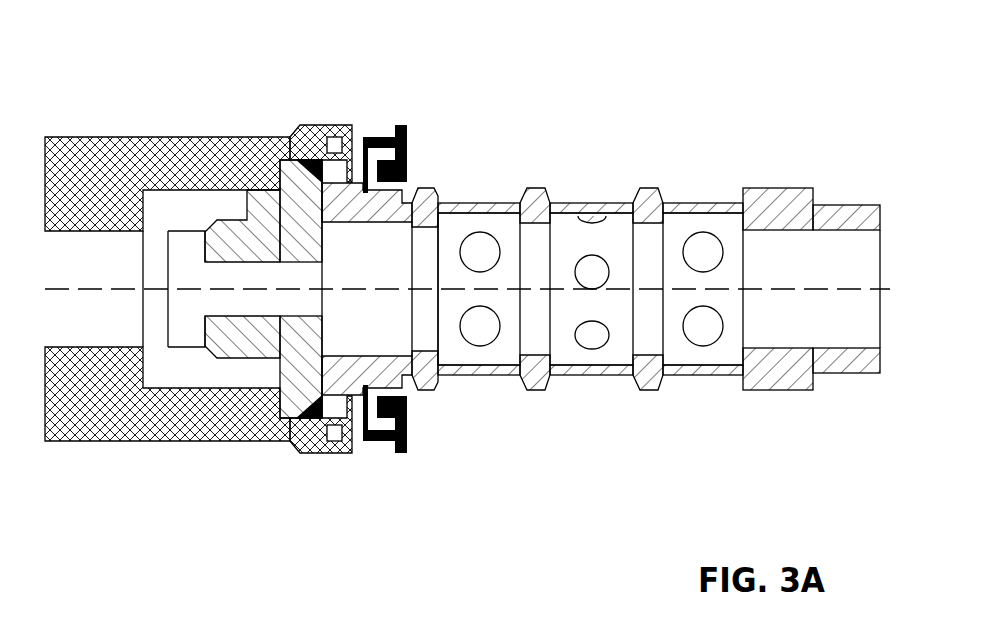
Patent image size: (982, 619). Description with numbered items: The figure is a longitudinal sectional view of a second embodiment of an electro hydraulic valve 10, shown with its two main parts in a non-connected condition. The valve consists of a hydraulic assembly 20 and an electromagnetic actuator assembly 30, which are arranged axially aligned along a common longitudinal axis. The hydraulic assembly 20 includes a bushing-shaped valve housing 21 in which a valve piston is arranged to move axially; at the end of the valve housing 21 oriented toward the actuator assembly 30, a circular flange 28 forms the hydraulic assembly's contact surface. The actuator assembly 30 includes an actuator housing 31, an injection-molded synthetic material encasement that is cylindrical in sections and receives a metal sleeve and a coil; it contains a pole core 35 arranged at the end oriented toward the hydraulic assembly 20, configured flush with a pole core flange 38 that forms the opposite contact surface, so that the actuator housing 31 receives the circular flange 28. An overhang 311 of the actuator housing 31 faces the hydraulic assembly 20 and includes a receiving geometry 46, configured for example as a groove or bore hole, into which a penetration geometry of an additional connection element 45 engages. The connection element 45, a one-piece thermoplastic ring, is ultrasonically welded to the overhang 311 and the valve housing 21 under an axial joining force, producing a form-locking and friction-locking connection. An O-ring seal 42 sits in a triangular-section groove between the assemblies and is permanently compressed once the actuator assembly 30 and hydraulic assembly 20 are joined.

The electro hydraulic valve 10 is at (467, 294).
The hydraulic assembly 20 is at (601, 353).
The valve housing 21 is at (648, 373).
The circular flange 28 is at (330, 417).
The electromagnetic actuator assembly 30 is at (248, 294).
The actuator housing 31 is at (75, 400).
The overhang 311 is at (336, 94).
The pole core 35 is at (267, 342).
The pole core flange 38 is at (285, 187).
The O-ring seal 42 is at (313, 457).
The connection element 45 is at (405, 455).
The receiving geometry 46 is at (338, 137).